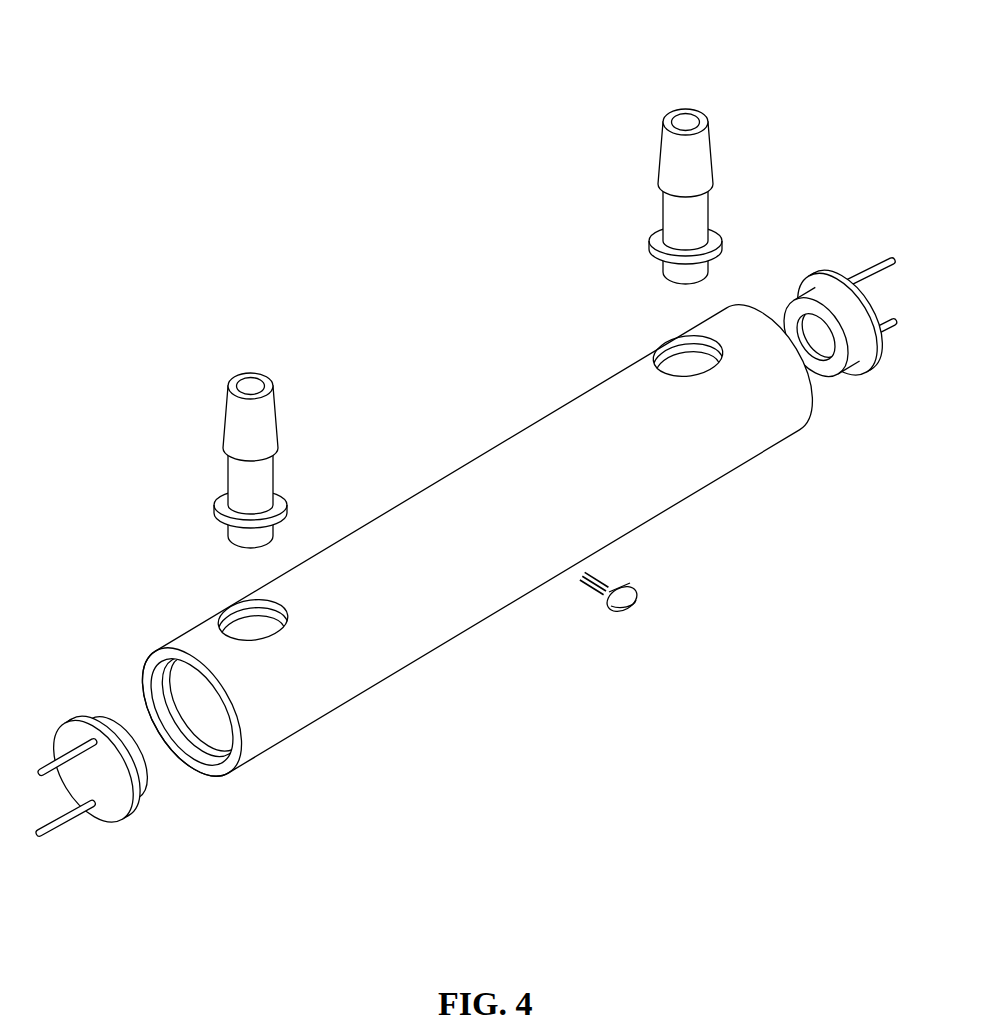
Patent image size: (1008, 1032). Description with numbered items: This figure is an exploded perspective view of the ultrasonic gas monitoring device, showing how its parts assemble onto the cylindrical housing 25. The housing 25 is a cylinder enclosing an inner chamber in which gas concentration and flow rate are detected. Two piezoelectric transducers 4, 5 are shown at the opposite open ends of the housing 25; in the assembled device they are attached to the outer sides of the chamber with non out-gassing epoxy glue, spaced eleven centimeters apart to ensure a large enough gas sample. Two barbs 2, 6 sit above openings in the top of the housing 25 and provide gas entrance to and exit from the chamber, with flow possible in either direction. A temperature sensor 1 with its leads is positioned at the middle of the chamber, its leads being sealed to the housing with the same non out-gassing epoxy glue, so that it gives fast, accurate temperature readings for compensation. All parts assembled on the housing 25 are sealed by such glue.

The temperature sensor 1 is at (617, 646).
The barb 2 is at (213, 386).
The piezoelectric transducer 4 is at (117, 849).
The piezoelectric transducer 5 is at (832, 409).
The barb 6 is at (638, 127).
The cylindrical housing 25 is at (313, 741).